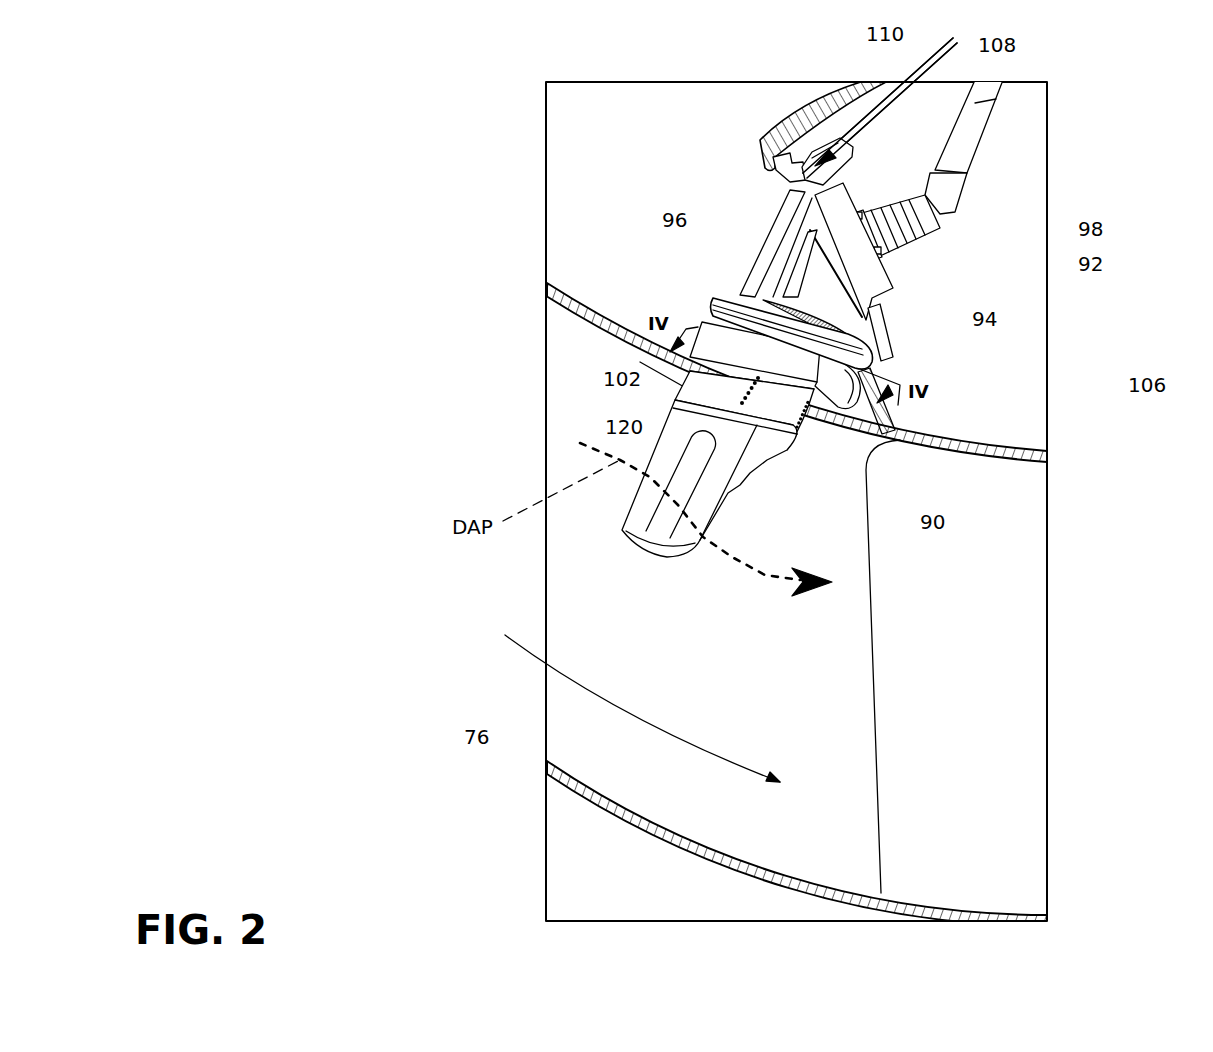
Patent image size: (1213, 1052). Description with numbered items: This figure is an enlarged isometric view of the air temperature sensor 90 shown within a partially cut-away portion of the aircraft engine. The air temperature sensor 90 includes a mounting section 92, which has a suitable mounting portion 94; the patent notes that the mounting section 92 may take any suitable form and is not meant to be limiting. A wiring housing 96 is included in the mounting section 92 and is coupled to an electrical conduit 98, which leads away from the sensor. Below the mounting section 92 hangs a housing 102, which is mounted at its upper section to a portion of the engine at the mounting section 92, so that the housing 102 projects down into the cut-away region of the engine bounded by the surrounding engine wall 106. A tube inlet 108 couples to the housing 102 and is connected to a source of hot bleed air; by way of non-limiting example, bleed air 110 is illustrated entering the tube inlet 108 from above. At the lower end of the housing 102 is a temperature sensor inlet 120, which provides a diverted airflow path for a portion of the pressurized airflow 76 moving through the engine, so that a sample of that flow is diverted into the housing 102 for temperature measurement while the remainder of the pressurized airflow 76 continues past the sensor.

The pressurized airflow 76 is at (607, 702).
The air temperature sensor 90 is at (913, 523).
The mounting section 92 is at (1073, 261).
The mounting portion 94 is at (850, 337).
The wiring housing 96 is at (797, 283).
The electrical conduit 98 is at (1073, 230).
The housing 102 is at (686, 384).
The nacelle inner wall 106 is at (1012, 440).
The tube inlet 108 is at (838, 150).
The bleed air 110 is at (926, 62).
The temperature sensor inlet 120 is at (688, 482).